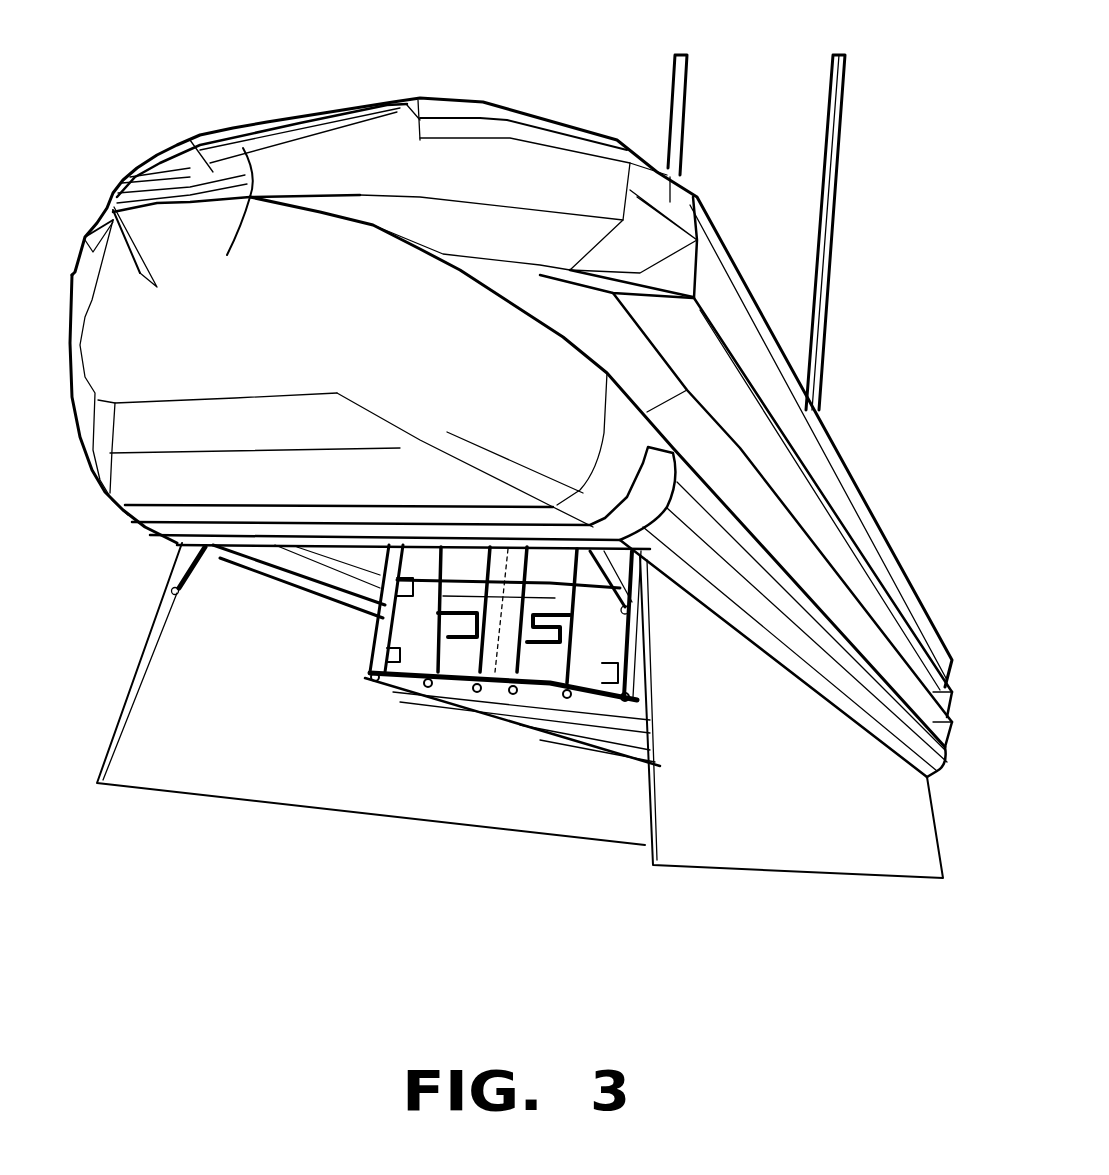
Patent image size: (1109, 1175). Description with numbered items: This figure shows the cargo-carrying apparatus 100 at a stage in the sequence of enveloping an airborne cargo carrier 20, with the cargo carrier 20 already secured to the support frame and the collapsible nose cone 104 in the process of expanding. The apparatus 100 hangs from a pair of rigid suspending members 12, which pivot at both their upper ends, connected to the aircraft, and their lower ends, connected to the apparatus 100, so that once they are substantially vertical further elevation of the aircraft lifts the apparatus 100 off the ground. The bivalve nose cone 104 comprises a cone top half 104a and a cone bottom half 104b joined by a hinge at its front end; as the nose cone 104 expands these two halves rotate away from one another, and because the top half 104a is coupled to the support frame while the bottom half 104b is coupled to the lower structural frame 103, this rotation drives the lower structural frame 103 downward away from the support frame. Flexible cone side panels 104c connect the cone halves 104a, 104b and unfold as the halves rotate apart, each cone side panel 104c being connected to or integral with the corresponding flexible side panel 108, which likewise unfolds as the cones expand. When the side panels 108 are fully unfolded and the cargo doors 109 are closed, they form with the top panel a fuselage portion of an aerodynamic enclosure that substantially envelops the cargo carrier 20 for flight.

The cargo-carrying apparatus 100 is at (888, 292).
The collapsible nose cone 104 is at (153, 68).
The cone top half 104a is at (412, 88).
The cone bottom half 104b is at (123, 513).
The flexible cone side panel 104c is at (540, 270).
The rigid suspending members 12 is at (823, 130).
The flexible side panels 108 is at (873, 570).
The cargo door 109 is at (143, 643).
The lower structural frame 103 is at (287, 586).
The cargo carrier 20 is at (540, 740).